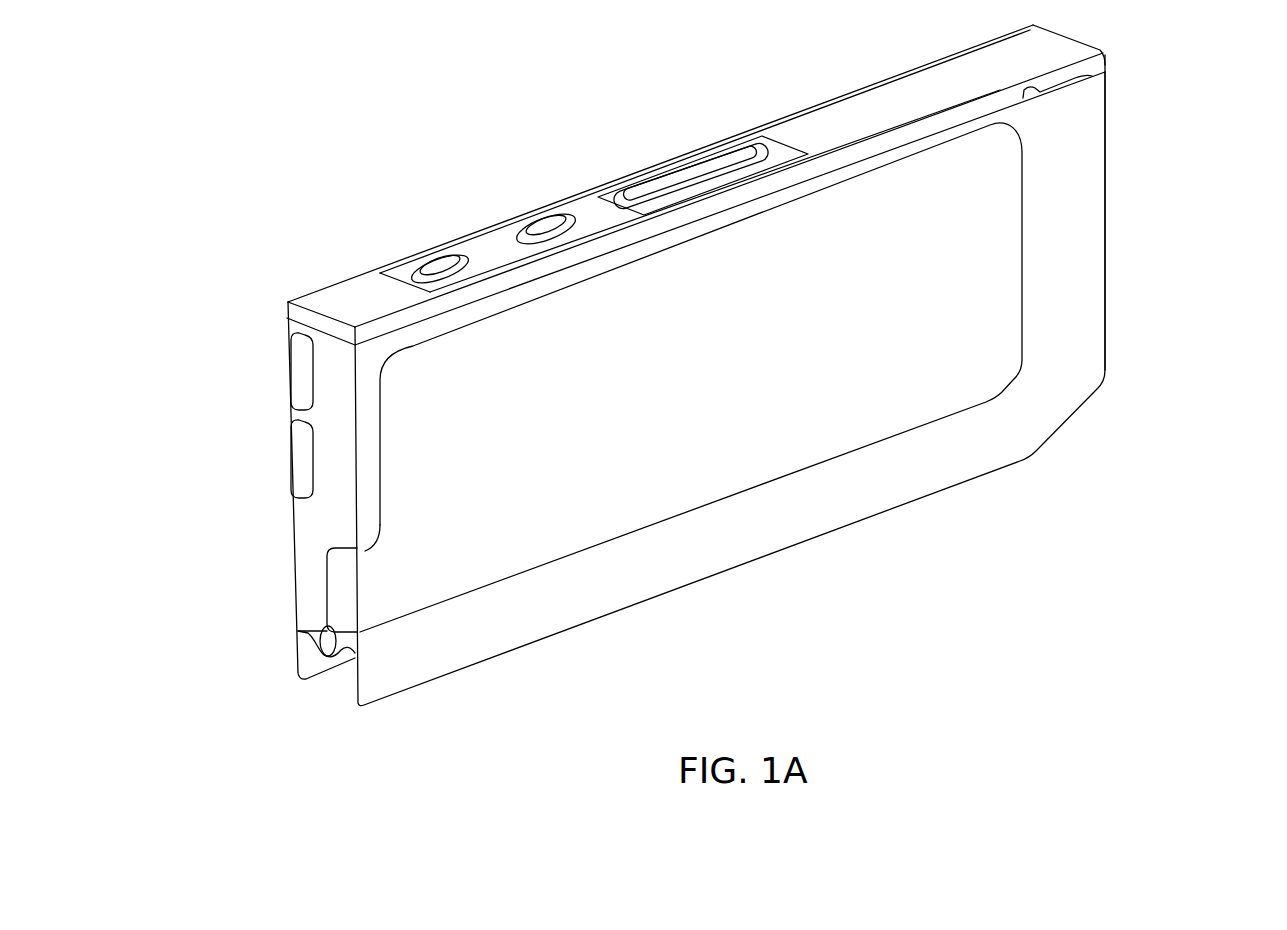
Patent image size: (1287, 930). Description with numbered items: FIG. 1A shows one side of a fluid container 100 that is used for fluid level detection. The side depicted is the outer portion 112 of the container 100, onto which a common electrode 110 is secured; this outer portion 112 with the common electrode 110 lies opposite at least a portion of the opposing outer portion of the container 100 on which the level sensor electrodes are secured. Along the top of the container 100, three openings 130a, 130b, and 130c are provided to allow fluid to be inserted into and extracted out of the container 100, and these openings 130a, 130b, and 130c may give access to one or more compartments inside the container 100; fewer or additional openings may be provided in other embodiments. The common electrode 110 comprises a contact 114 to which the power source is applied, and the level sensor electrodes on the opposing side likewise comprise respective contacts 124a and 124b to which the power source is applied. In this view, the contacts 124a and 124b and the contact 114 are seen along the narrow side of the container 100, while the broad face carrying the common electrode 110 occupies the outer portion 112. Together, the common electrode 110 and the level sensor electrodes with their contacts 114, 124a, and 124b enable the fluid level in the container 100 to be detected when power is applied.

The fluid container 100 is at (268, 199).
The common electrode 110 is at (866, 403).
The outer portion 112 is at (1078, 262).
The contact 114 is at (340, 597).
The contact 124a is at (300, 373).
The contact 124b is at (300, 462).
The opening 130a is at (436, 270).
The opening 130b is at (545, 230).
The opening 130c is at (697, 178).